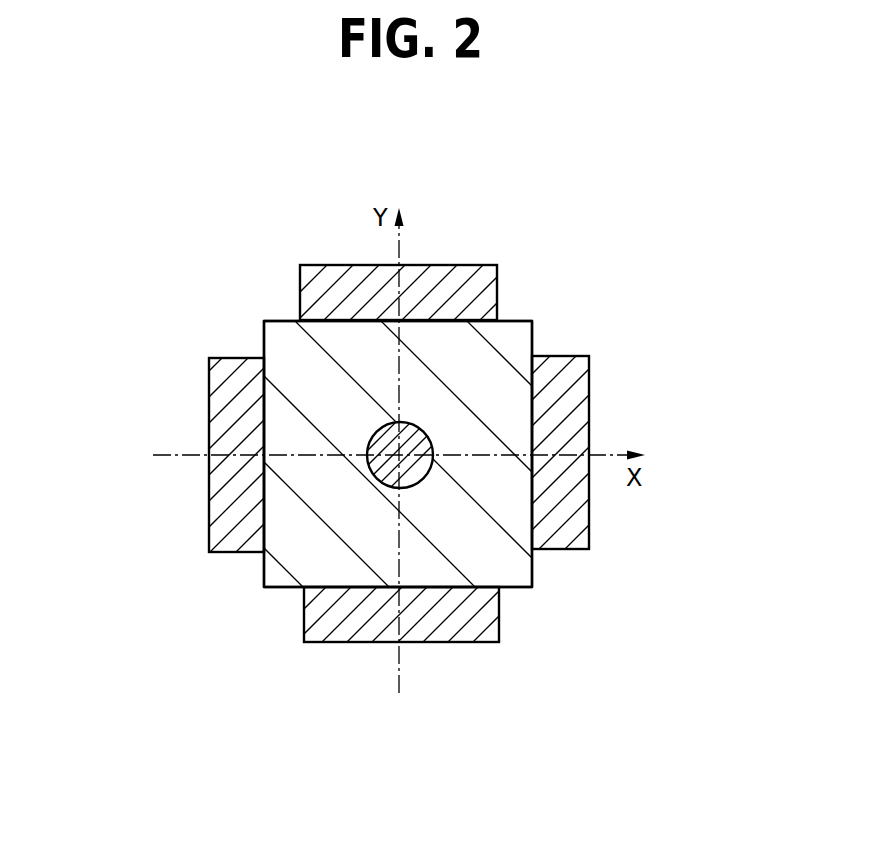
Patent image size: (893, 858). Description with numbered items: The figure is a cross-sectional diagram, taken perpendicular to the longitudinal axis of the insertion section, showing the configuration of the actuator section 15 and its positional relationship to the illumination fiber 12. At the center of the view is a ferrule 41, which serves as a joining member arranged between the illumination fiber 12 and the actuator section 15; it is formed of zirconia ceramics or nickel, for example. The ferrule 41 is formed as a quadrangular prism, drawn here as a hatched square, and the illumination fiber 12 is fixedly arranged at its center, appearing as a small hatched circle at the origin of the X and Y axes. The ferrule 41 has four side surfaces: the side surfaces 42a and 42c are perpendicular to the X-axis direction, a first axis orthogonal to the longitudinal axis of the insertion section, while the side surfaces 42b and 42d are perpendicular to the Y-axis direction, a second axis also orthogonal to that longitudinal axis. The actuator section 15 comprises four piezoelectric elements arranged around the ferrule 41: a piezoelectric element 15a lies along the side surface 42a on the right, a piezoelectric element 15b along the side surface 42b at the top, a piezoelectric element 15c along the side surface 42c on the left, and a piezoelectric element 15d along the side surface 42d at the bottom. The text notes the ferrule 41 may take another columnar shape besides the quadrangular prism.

The illumination fiber 12 is at (419, 426).
The actuator section 15 is at (446, 450).
The piezoelectric element 15a is at (589, 382).
The piezoelectric element 15b is at (470, 265).
The piezoelectric element 15c is at (211, 526).
The piezoelectric element 15d is at (323, 642).
The ferrule 41 is at (509, 336).
The side surface 42a is at (533, 566).
The side surface 42b is at (284, 320).
The side surface 42c is at (264, 338).
The side surface 42d is at (520, 590).